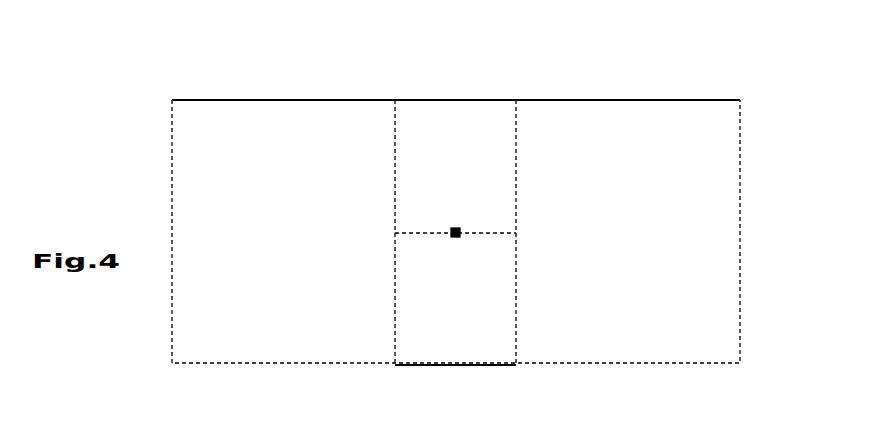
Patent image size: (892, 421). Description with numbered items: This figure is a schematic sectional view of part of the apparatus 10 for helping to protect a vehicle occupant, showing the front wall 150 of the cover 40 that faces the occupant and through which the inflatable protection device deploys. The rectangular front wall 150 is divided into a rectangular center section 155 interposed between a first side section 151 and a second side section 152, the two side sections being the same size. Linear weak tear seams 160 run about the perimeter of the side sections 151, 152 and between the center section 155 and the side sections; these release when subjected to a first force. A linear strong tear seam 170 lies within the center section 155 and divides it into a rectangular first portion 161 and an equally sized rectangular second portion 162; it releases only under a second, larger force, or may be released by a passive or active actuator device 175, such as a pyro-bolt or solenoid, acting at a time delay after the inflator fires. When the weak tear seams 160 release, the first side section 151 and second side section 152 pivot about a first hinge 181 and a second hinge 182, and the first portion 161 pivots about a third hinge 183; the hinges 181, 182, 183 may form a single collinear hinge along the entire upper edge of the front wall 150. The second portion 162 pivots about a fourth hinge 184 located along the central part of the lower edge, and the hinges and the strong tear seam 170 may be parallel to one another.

The apparatus 10 is at (770, 112).
The cover 40 is at (753, 80).
The front wall 150 is at (177, 83).
The first side section 151 is at (260, 77).
The second side section 152 is at (643, 97).
The center section 155 is at (492, 90).
The weak tear seams 160 is at (172, 255).
The first portion 161 is at (477, 163).
The second portion 162 is at (480, 338).
The strong tear seam 170 is at (478, 237).
The actuator device 175 is at (451, 230).
The first hinge 181 is at (357, 100).
The second hinge 182 is at (580, 100).
The third hinge 183 is at (437, 100).
The fourth hinge 184 is at (442, 367).